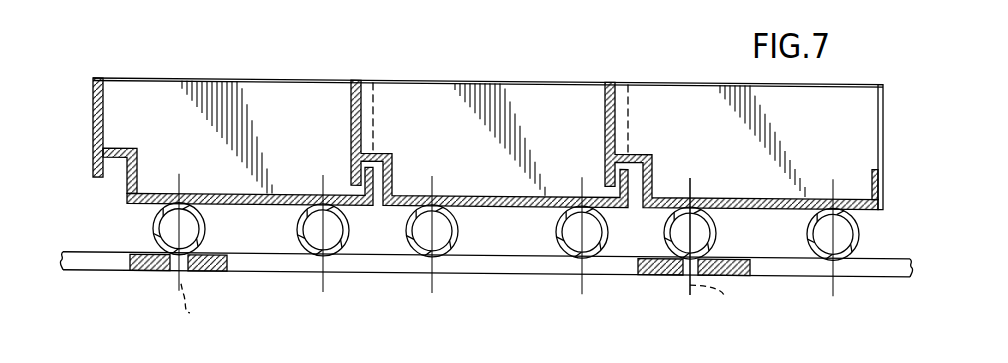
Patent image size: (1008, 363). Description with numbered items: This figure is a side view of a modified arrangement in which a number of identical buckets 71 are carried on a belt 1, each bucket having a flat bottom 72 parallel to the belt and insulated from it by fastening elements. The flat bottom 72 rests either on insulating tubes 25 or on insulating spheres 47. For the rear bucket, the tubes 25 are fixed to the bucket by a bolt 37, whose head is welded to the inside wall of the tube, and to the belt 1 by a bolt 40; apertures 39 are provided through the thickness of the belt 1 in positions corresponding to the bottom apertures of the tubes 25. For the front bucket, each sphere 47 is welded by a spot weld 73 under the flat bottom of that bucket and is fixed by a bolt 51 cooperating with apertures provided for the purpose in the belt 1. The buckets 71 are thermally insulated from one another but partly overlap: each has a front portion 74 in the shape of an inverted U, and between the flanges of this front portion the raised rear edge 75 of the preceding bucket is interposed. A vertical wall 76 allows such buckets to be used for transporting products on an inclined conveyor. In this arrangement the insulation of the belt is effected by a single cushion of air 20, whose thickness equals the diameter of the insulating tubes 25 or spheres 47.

The belt 1 is at (873, 251).
The cushion of air 20 is at (516, 234).
The insulating tubes 25 is at (806, 228).
The bolt 37 is at (741, 161).
The apertures 39 is at (172, 269).
The bolt 40 is at (724, 290).
The insulating spheres 47 is at (207, 223).
The bolt 51 is at (190, 312).
The buckets 71 is at (165, 113).
The flat bottom 72 is at (822, 192).
The spot weld 73 is at (167, 203).
The front portion 74 is at (115, 168).
The raised rear edge 75 is at (881, 168).
The vertical wall 76 is at (93, 106).